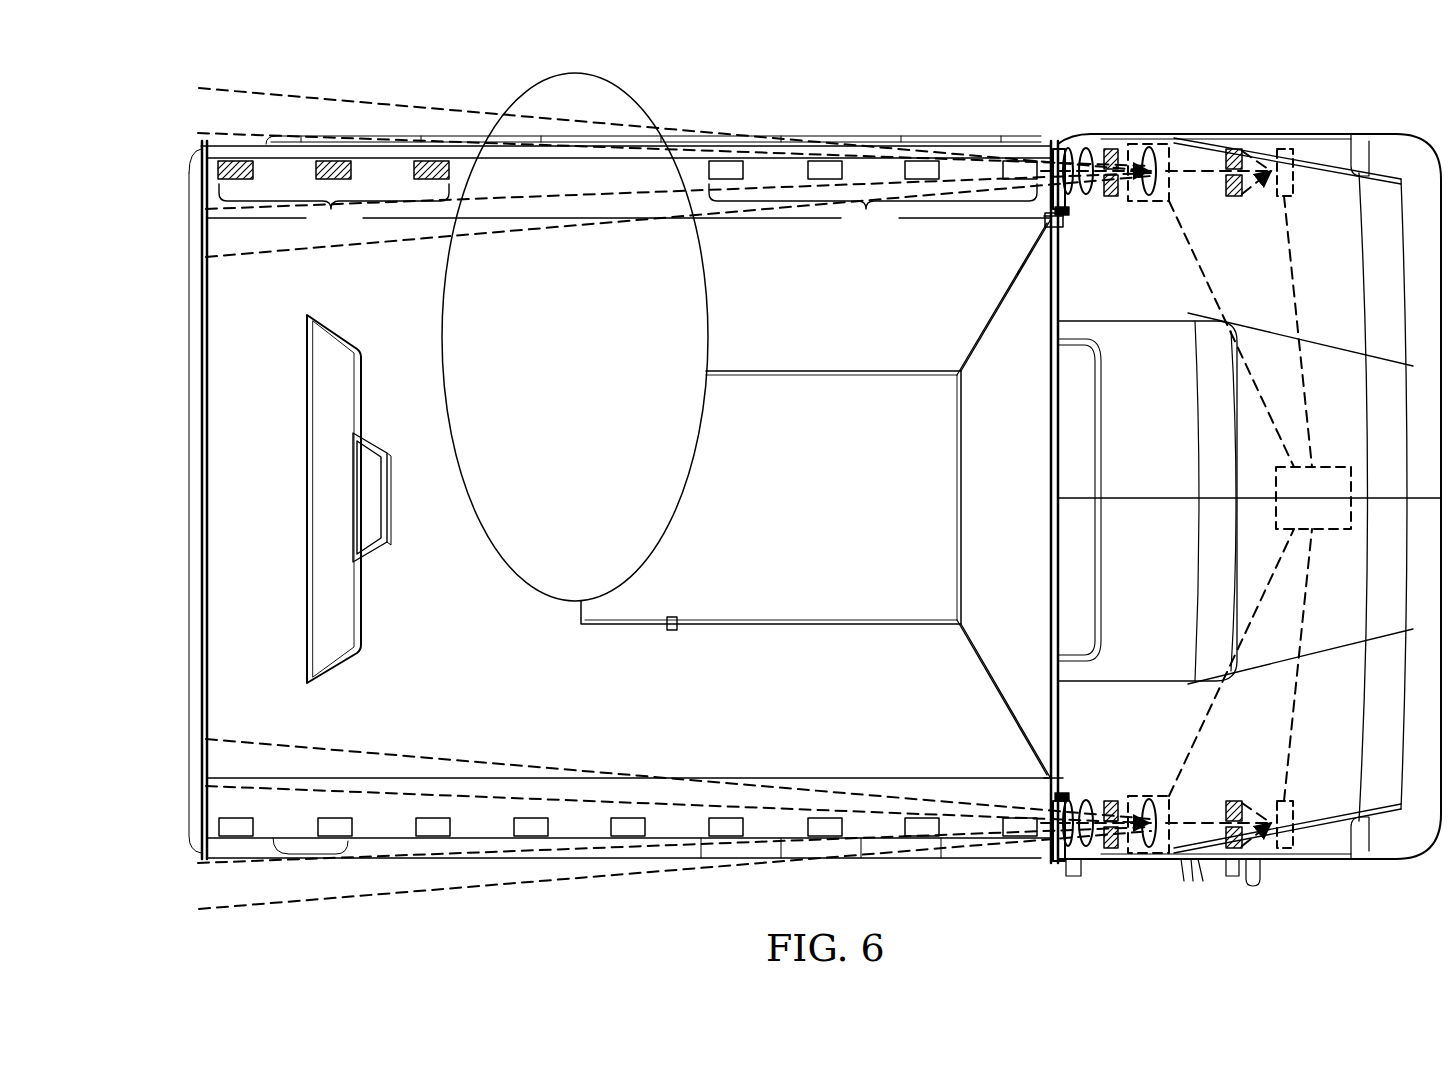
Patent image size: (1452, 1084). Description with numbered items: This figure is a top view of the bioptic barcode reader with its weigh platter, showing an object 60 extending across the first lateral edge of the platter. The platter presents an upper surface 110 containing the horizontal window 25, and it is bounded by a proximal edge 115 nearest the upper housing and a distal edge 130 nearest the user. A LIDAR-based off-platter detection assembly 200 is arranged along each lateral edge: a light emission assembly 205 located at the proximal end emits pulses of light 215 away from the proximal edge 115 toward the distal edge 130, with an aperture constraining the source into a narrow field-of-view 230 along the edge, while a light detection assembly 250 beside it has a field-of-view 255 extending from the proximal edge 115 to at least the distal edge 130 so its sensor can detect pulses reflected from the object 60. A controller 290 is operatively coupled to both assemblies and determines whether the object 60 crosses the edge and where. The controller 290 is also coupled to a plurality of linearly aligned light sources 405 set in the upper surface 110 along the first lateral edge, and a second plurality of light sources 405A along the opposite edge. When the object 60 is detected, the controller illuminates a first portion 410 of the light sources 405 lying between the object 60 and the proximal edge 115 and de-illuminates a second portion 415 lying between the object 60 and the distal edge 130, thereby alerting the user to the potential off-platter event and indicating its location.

The horizontal window 25 is at (778, 395).
The object 60 is at (574, 76).
The upper surface 110 is at (432, 284).
The proximal edge 115 is at (1045, 222).
The distal edge 130 is at (208, 455).
The off-platter detection assembly 200 is at (1145, 700).
The light emission assembly 205 is at (1115, 130).
The pulses of light 215 is at (712, 784).
The narrow field-of-view 230 is at (965, 810).
The light detection assembly 250 is at (1255, 130).
The field-of-view 255 is at (820, 810).
The controller 290 is at (1310, 462).
The light sources 405 is at (225, 170).
The second plurality of linearly aligned light sources 405A is at (232, 832).
The first portion of light sources 410 is at (873, 214).
The second portion of light sources 415 is at (334, 210).